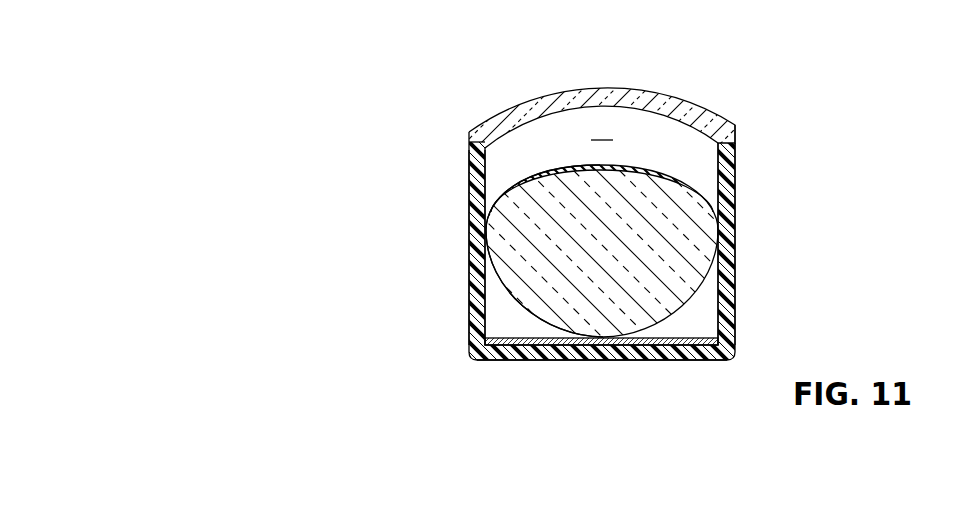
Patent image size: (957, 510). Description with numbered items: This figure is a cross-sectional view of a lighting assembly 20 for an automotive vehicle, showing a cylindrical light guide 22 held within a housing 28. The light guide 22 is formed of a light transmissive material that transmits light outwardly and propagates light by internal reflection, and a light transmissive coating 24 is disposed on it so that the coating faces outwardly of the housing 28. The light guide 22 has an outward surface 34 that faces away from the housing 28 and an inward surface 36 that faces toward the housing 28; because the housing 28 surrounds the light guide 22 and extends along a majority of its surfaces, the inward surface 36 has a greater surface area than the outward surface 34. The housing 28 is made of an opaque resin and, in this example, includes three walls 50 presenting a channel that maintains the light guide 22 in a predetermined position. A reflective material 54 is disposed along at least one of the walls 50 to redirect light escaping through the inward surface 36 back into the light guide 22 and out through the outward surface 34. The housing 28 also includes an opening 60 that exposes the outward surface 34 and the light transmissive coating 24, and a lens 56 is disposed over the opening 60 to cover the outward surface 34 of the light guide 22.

The lighting assembly 20 is at (729, 118).
The light guide 22 is at (698, 303).
The light transmissive coating 24 is at (697, 178).
The housing 28 is at (739, 231).
The outward surface 34 is at (492, 186).
The inward surface 36 is at (512, 293).
The walls 50 is at (729, 284).
The reflective material 54 is at (675, 346).
The lens 56 is at (667, 102).
The opening 60 is at (602, 130).